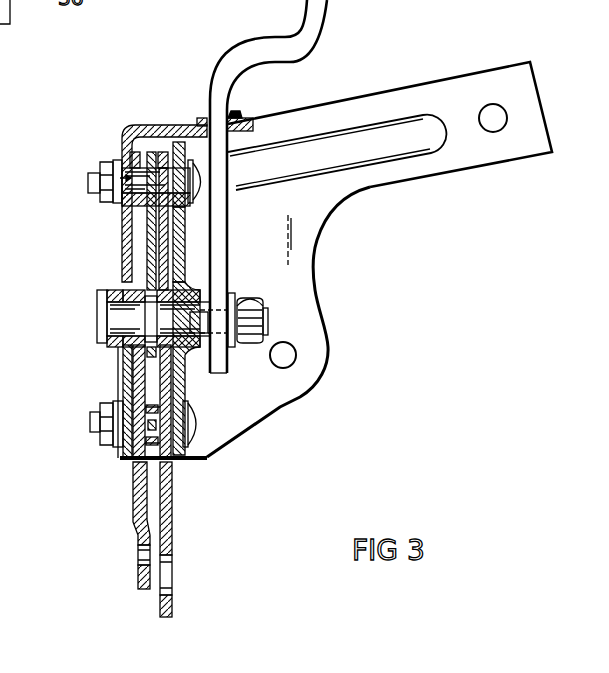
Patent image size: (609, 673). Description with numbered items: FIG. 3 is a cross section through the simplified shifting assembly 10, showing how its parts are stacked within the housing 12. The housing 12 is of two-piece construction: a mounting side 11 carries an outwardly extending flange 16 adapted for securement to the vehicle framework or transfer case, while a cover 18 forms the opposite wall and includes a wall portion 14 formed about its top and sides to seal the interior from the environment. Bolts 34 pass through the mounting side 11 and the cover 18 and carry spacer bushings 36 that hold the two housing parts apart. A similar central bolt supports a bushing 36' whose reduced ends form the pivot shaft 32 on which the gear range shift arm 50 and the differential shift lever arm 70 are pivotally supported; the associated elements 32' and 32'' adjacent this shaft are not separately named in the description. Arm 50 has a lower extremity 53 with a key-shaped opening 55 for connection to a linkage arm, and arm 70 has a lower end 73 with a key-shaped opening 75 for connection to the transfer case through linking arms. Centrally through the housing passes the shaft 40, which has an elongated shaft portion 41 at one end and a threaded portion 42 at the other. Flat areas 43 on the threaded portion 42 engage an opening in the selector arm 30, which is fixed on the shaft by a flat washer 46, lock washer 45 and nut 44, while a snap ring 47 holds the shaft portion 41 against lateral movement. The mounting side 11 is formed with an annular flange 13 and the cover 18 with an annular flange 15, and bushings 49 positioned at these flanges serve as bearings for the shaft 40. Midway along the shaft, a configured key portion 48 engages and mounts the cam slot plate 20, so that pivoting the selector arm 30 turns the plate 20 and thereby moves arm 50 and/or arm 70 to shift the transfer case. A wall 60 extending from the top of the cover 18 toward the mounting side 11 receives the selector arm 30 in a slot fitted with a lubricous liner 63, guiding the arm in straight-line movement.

The shifting assembly 10 is at (387, 293).
The mounting side 11 is at (186, 148).
The housing 12 is at (168, 118).
The annular flange 13 is at (190, 280).
The wall portion 14 is at (127, 128).
The annular flange 15 is at (125, 357).
The outwardly extending flange 16 is at (447, 93).
The cover 18 is at (125, 390).
The cam slot plate 20 is at (148, 244).
The selector arm 30 is at (316, 33).
The pivot shaft 32 is at (112, 184).
The bolt head 32' is at (246, 190).
The washer 32'' is at (102, 198).
The bolts 34 is at (257, 178).
The bushings 36 is at (128, 446).
The bushing 36' is at (148, 124).
The shaft 40 is at (88, 332).
The elongated shaft portion 41 is at (125, 316).
The threaded portion 42 is at (268, 320).
The flat areas 43 is at (200, 323).
The nut 44 is at (253, 307).
The lock washer 45 is at (251, 298).
The flat washer 46 is at (118, 293).
The snap ring 47 is at (99, 293).
The configured key portion 48 is at (150, 317).
The bushings 49 is at (200, 357).
The gear range shift arm 50 is at (140, 537).
The lower extremity 53 is at (143, 588).
The key-shaped opening 55 is at (147, 553).
The wall 60 is at (254, 125).
The liner 63 is at (238, 117).
The differential shift lever arm 70 is at (172, 513).
The lower end 73 is at (175, 607).
The key-shaped opening 75 is at (165, 582).